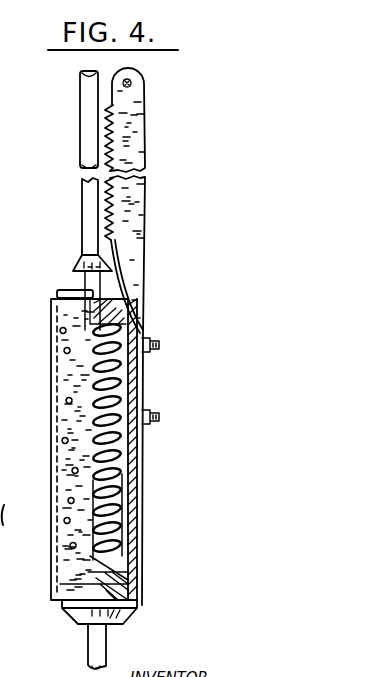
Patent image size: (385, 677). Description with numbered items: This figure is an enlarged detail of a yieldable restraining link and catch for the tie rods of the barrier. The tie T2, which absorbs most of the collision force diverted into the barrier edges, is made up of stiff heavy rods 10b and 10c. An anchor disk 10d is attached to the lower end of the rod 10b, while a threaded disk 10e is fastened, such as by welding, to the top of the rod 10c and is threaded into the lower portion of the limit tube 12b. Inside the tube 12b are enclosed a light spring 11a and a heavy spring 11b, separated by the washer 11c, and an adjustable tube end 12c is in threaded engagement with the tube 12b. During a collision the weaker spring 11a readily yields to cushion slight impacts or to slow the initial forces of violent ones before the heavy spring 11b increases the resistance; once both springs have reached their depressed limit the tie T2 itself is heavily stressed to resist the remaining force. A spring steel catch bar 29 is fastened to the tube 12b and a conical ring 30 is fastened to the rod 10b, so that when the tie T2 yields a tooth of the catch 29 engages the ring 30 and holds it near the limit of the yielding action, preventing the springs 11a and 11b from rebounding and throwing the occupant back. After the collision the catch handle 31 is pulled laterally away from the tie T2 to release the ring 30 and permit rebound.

The tie T2 is at (74, 138).
The catch handle 31 is at (131, 86).
The spring steel catch bar 29 is at (145, 206).
The rod 10b is at (82, 196).
The conical ring 30 is at (74, 265).
The adjustable tube end 12c is at (70, 296).
The limit tube 12b is at (51, 334).
The heavy spring 11b is at (126, 480).
The washer 11c is at (132, 488).
The light spring 11a is at (133, 509).
The anchor disk 10d is at (122, 557).
The threaded disk 10e is at (118, 612).
The rod 10c is at (106, 653).